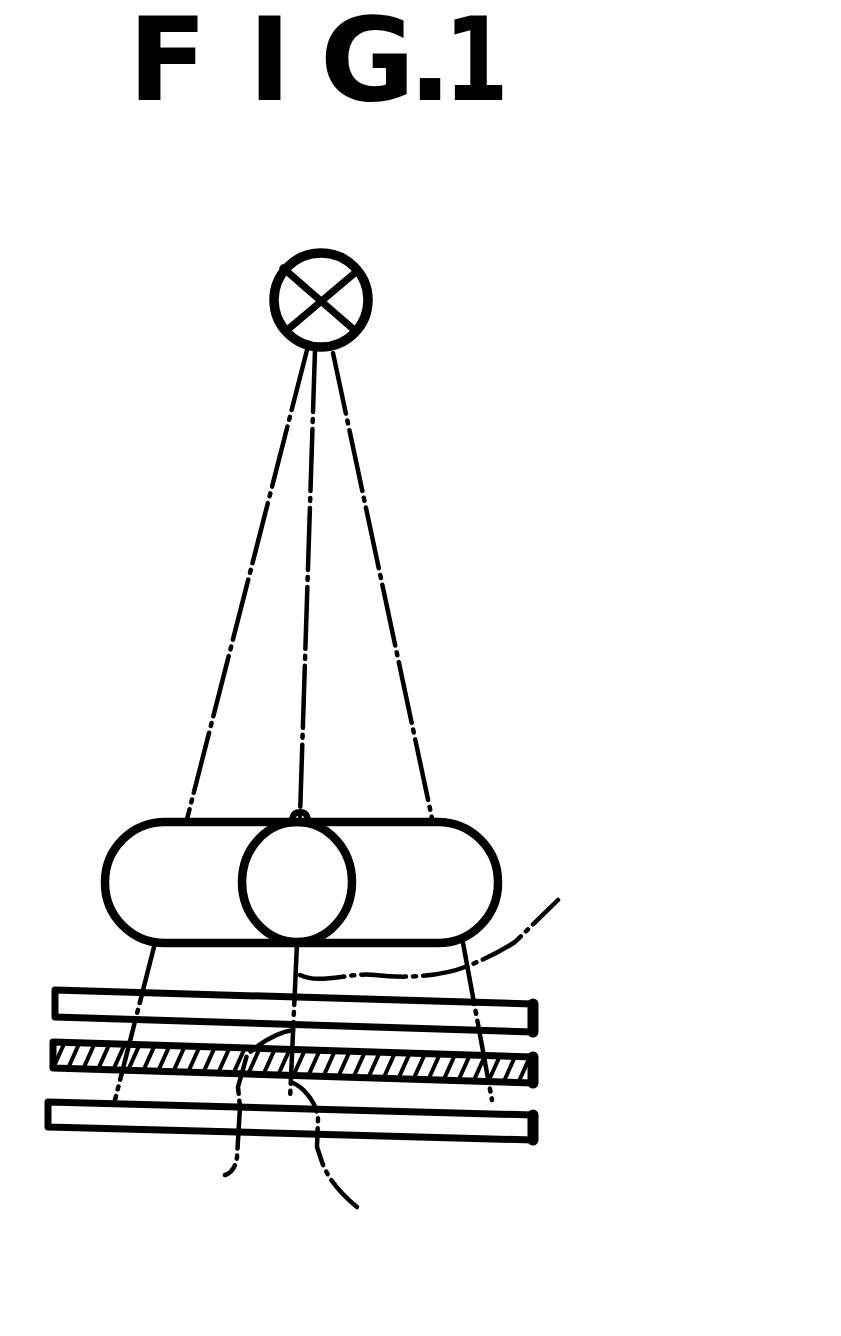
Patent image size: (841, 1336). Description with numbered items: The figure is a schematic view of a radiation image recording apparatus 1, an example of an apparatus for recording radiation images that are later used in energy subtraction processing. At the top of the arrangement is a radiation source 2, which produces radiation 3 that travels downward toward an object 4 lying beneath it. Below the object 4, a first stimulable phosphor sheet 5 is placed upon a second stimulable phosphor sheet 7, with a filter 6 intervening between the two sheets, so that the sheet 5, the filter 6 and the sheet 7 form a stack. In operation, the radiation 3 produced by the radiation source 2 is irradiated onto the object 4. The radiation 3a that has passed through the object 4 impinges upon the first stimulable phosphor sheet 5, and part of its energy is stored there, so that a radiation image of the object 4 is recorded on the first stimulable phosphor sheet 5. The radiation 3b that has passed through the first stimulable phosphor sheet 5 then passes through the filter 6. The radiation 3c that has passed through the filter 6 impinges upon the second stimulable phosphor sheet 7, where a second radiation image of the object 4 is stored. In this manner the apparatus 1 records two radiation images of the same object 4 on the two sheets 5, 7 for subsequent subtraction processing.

The radiation image recording apparatus 1 is at (604, 532).
The radiation source 2 is at (373, 283).
The radiation 3 is at (258, 517).
The radiation which has passed through the object 3a is at (465, 910).
The radiation which has passed through the first stimulable phosphor sheet 3b is at (215, 1130).
The radiation which has passed through the filter 3c is at (369, 1160).
The object 4 is at (503, 853).
The first stimulable phosphor sheet 5 is at (537, 1000).
The filter 6 is at (537, 1068).
The second stimulable phosphor sheet 7 is at (537, 1130).